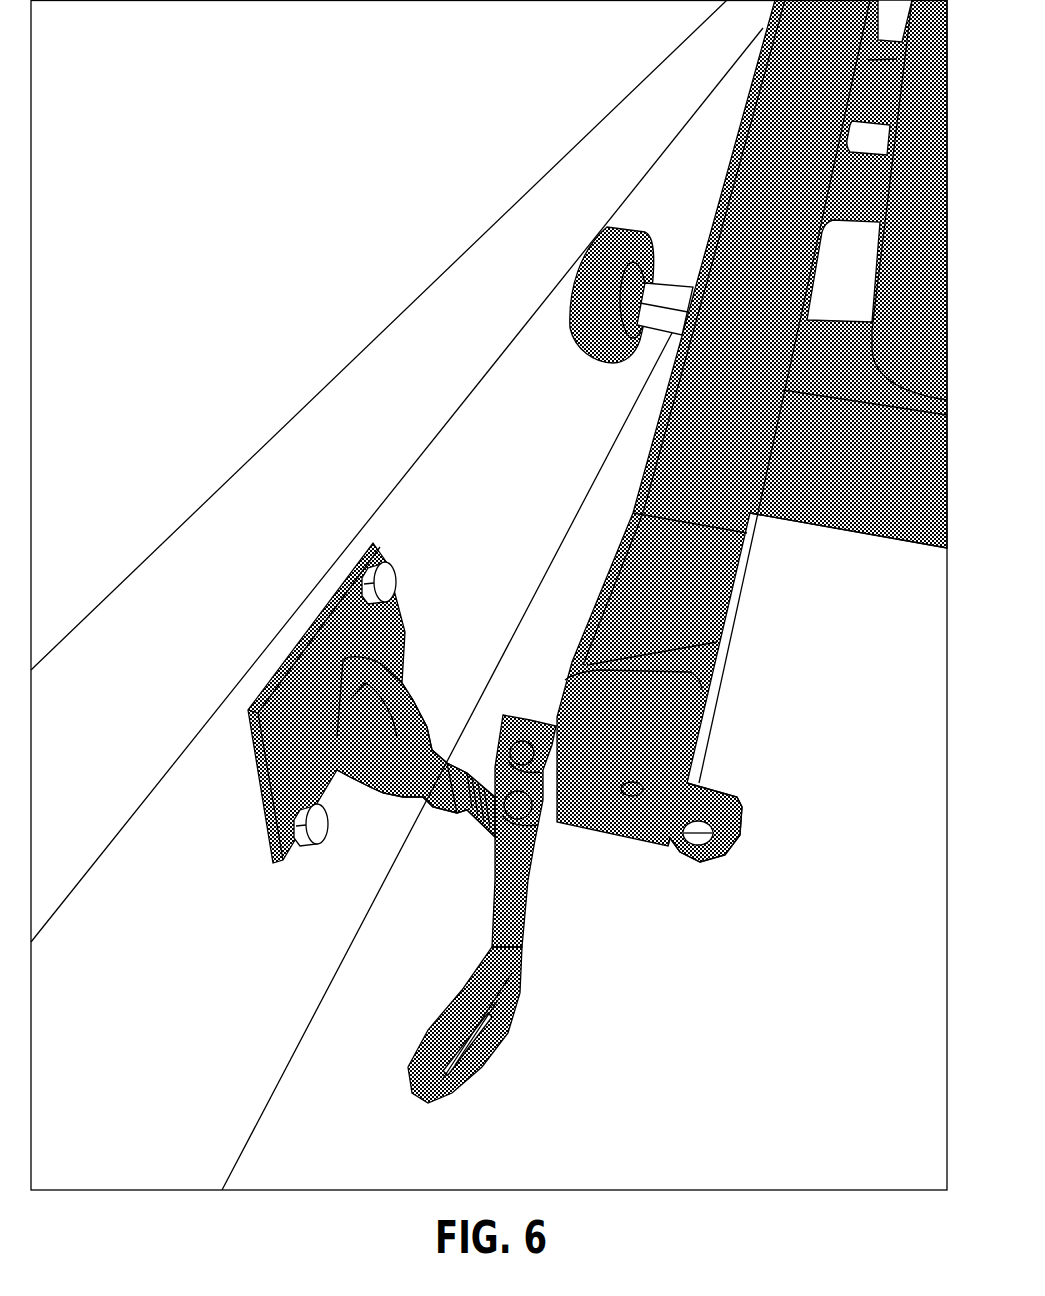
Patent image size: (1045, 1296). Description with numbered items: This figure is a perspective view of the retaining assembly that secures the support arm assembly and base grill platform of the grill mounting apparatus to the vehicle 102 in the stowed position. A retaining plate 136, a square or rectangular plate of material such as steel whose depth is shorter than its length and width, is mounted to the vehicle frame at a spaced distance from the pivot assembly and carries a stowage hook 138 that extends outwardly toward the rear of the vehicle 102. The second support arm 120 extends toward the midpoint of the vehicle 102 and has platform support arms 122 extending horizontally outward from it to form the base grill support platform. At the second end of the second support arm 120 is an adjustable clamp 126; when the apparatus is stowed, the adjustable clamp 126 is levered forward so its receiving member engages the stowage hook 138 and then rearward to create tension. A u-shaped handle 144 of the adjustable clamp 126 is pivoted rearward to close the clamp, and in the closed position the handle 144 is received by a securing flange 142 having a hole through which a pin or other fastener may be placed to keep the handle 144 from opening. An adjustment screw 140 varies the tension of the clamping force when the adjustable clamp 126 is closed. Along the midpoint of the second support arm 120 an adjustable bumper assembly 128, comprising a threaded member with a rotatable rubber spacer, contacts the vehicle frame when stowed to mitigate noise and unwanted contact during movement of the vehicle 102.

The vehicle 102 is at (205, 195).
The second support arm 120 is at (732, 605).
The platform support arms 122 is at (860, 530).
The adjustable clamp 126 is at (540, 847).
The adjustable bumper assembly 128 is at (583, 263).
The retaining plate 136 is at (323, 608).
The stowage hook 138 is at (375, 793).
The adjustment screw 140 is at (467, 772).
The securing flange 142 is at (700, 860).
The handle 144 is at (473, 1070).